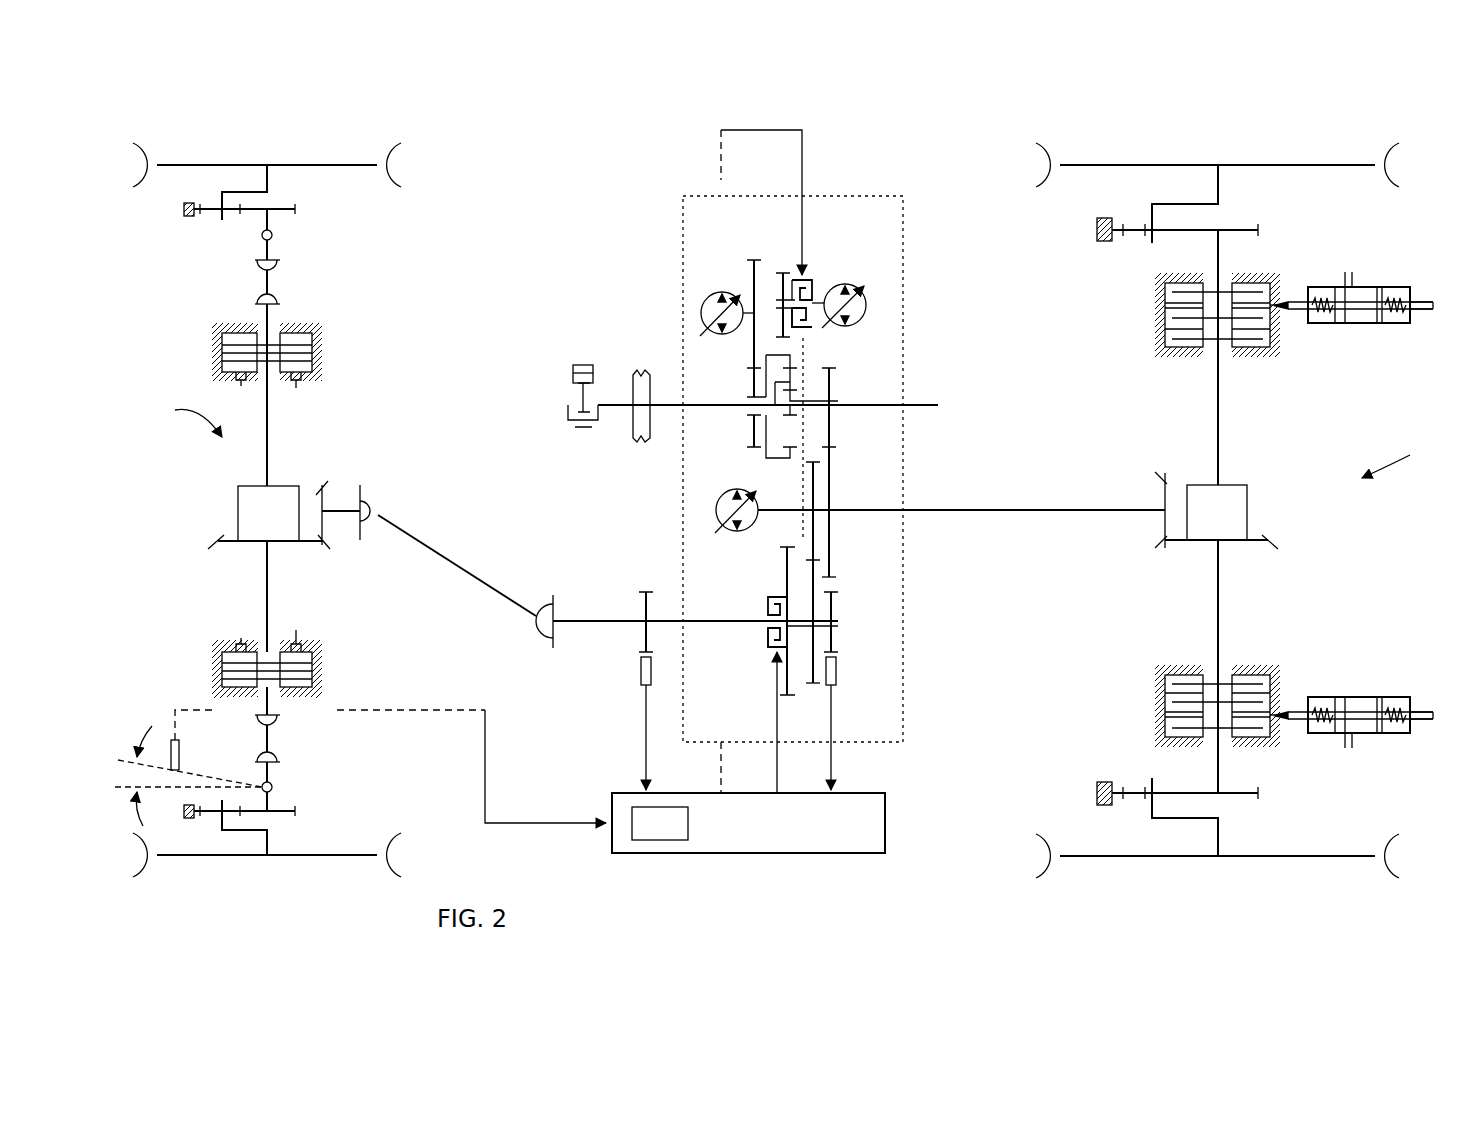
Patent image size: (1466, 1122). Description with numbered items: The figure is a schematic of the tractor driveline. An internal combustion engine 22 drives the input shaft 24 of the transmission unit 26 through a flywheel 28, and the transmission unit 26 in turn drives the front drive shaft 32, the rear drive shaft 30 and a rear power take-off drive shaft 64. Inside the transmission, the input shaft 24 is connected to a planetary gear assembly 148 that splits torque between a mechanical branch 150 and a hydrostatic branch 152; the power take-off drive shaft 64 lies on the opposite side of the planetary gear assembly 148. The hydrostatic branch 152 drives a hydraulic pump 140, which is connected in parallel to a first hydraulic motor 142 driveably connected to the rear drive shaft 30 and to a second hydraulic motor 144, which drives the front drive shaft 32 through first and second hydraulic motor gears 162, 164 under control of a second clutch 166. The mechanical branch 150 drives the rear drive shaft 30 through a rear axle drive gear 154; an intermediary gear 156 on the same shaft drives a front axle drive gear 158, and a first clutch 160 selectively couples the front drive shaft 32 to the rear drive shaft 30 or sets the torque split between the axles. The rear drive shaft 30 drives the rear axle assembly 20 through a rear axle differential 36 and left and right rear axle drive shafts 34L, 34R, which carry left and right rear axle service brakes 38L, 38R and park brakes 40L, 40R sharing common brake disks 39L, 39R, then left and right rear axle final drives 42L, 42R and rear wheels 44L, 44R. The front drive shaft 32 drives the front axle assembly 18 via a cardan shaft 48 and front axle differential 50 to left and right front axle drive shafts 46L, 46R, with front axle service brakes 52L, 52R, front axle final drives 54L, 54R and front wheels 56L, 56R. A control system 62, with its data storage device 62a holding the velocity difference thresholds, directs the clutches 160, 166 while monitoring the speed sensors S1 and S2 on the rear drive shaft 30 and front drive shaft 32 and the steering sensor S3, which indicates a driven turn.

The front axle assembly 18 is at (186, 408).
The rear axle assembly 20 is at (1396, 448).
The internal combustion engine 22 is at (576, 365).
The input shaft 24 is at (608, 408).
The transmission unit 26 is at (896, 196).
The flywheel 28 is at (644, 372).
The rear drive shaft 30 is at (1002, 512).
The front drive shaft 32 is at (580, 617).
The rear axle left drive shaft 34L is at (1215, 590).
The rear axle right drive shaft 34R is at (1215, 385).
The rear axle differential 36 is at (1243, 500).
The left rear axle service brake 38L is at (1322, 732).
The right rear axle service brake 38R is at (1326, 318).
The left brake disks 39L is at (1157, 708).
The right brake disks 39R is at (1157, 330).
The left park brake 40L is at (1404, 732).
The right park brake 40R is at (1404, 318).
The left rear axle final drive 42L is at (1262, 795).
The right rear axle final drive 42R is at (1262, 228).
The left rear wheel 44L is at (1238, 858).
The right rear wheel 44R is at (1180, 163).
The front axle left drive shaft 46L is at (266, 586).
The front axle right drive shaft 46R is at (268, 428).
The cardan shaft 48 is at (408, 534).
The front axle differential 50 is at (250, 527).
The left front axle service brake 52L is at (312, 662).
The right front axle service brake 52R is at (224, 346).
The left front axle final drive 54L is at (292, 814).
The right front axle final drive 54R is at (288, 212).
The left front wheel 56L is at (238, 857).
The right front wheel 56R is at (258, 163).
The control system 62 is at (768, 852).
The data storage device 62a is at (645, 842).
The rear power take-off drive shaft 64 is at (926, 404).
The hydraulic pump 140 is at (705, 300).
The first hydraulic motor 142 is at (716, 512).
The second hydraulic motor 144 is at (862, 302).
The planetary gear assembly 148 is at (752, 390).
The mechanical branch 150 is at (831, 388).
The hydrostatic branch 152 is at (748, 266).
The rear axle drive gear 154 is at (831, 484).
The intermediary gear 156 is at (815, 528).
The front axle drive gear 158 is at (813, 686).
The first clutch 160 is at (768, 645).
The first hydraulic motor gear 162 is at (782, 283).
The second hydraulic motor gear 164 is at (783, 597).
The second clutch 166 is at (810, 290).
The speed sensor S1 is at (838, 672).
The speed sensor S2 is at (643, 672).
The steering sensor S3 is at (173, 742).